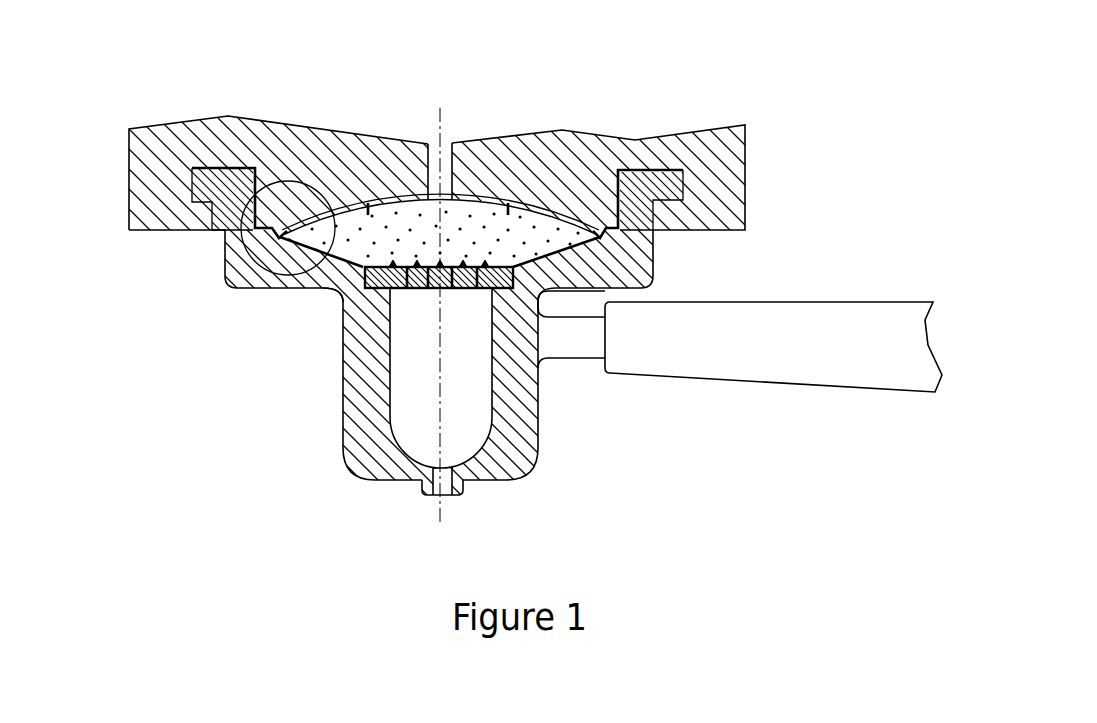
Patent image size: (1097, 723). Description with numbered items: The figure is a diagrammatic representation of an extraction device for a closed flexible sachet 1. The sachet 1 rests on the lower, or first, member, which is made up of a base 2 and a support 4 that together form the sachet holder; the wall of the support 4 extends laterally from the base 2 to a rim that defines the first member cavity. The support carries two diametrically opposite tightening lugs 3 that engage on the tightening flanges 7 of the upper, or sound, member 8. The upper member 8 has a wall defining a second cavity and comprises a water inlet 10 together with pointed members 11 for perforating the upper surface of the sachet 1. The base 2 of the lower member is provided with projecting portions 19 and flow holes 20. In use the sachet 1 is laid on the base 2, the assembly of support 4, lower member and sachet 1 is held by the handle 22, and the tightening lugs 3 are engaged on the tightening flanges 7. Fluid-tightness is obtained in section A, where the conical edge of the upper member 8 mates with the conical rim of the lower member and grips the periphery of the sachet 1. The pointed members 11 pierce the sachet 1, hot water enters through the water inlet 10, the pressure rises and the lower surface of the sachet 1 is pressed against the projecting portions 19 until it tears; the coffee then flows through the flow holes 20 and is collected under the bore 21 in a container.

The sachet 1 is at (478, 225).
The base 2 is at (343, 342).
The tightening lugs 3 is at (205, 185).
The support 4 is at (540, 415).
The tightening flanges 7 is at (152, 126).
The upper member 8 is at (720, 185).
The water inlet 10 is at (447, 145).
The pointed members 11 is at (368, 205).
The projecting portions 19 is at (330, 292).
The flow holes 20 is at (423, 290).
The bore 21 is at (433, 497).
The handle 22 is at (810, 335).
The section A is at (225, 258).